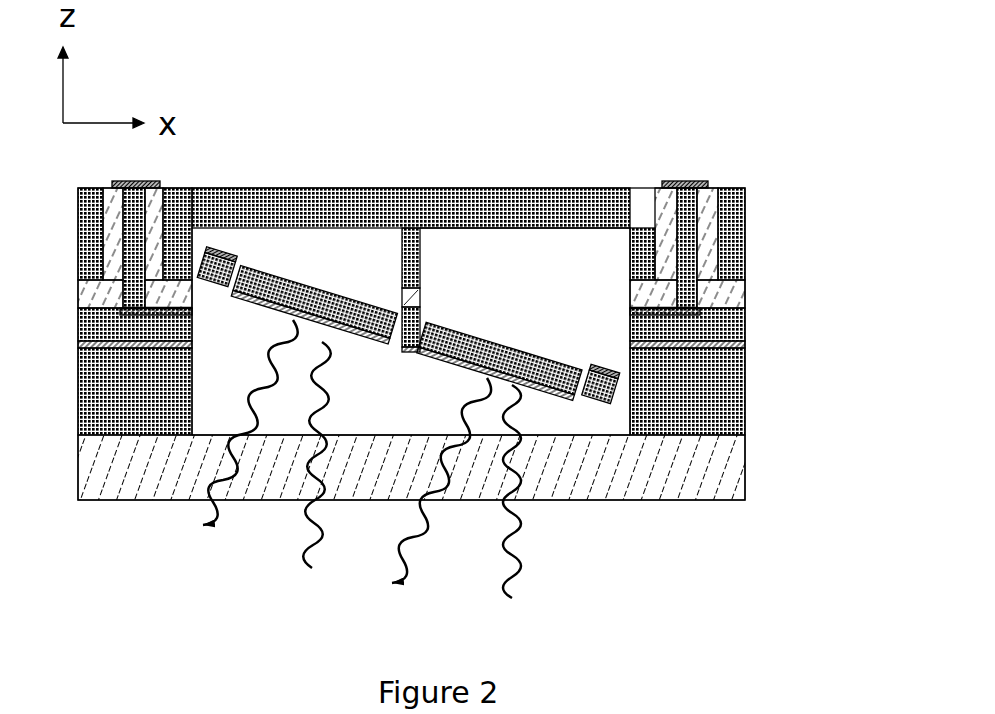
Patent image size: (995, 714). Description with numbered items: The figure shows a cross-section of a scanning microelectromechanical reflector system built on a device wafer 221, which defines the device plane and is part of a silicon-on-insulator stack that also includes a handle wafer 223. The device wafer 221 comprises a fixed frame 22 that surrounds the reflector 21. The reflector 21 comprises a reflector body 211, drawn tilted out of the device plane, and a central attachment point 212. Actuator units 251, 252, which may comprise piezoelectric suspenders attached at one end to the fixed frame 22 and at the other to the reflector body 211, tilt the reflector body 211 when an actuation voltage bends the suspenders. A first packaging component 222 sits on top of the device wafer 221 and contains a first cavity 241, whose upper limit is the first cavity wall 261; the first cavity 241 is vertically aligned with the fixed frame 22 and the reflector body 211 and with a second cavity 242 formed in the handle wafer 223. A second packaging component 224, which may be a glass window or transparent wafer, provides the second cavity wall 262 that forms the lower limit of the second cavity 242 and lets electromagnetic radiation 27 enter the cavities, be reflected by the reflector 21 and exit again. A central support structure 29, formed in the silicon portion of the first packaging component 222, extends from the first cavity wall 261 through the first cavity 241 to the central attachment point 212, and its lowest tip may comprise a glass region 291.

The reflector 21 is at (457, 320).
The reflector body 211 is at (263, 287).
The central attachment point 212 is at (410, 327).
The fixed frame 22 is at (167, 337).
The device wafer 221 is at (765, 308).
The first packaging component 222 is at (765, 183).
The handle wafer 223 is at (765, 350).
The second packaging component 224 is at (765, 437).
The first cavity 241 is at (500, 263).
The second cavity 242 is at (217, 403).
The actuator unit 251 is at (223, 272).
The actuator unit 252 is at (598, 392).
The first cavity wall 261 is at (462, 228).
The second cavity wall 262 is at (380, 430).
The radiation 27 is at (362, 459).
The central support structure 29 is at (410, 265).
The glass region 291 is at (402, 296).